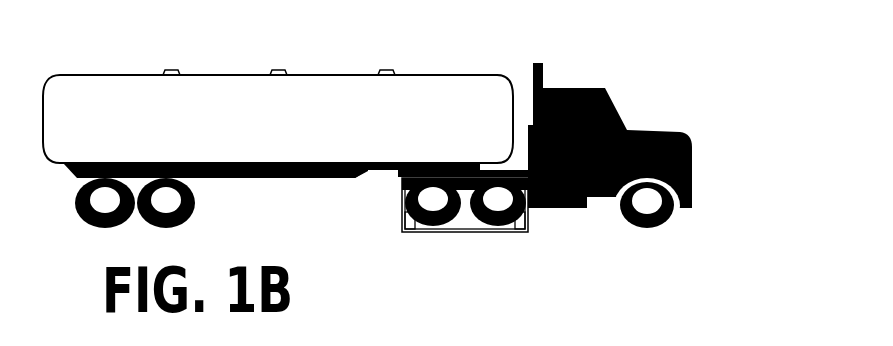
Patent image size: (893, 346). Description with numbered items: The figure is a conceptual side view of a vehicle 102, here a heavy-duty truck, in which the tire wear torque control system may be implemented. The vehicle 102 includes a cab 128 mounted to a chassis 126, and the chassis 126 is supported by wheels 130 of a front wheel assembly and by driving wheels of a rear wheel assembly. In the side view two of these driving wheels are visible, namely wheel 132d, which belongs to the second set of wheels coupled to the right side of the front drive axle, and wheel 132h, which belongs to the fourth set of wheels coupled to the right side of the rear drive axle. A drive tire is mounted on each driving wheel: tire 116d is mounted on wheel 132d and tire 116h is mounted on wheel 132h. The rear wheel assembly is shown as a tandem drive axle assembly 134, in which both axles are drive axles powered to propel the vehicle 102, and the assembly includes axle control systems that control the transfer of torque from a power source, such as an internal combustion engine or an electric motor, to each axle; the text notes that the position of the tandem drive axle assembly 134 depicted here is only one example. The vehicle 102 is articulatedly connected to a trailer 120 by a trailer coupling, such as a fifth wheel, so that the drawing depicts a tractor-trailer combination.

The vehicle 102 is at (753, 96).
The trailer 120 is at (294, 131).
The chassis 126 is at (525, 171).
The cab 128 is at (645, 130).
The wheels 130 is at (647, 203).
The driving wheel 132h is at (430, 202).
The driving wheel 132d is at (494, 201).
The tandem drive axle assembly 134 is at (457, 232).
The drive tire 116h is at (413, 213).
The drive tire 116d is at (522, 213).